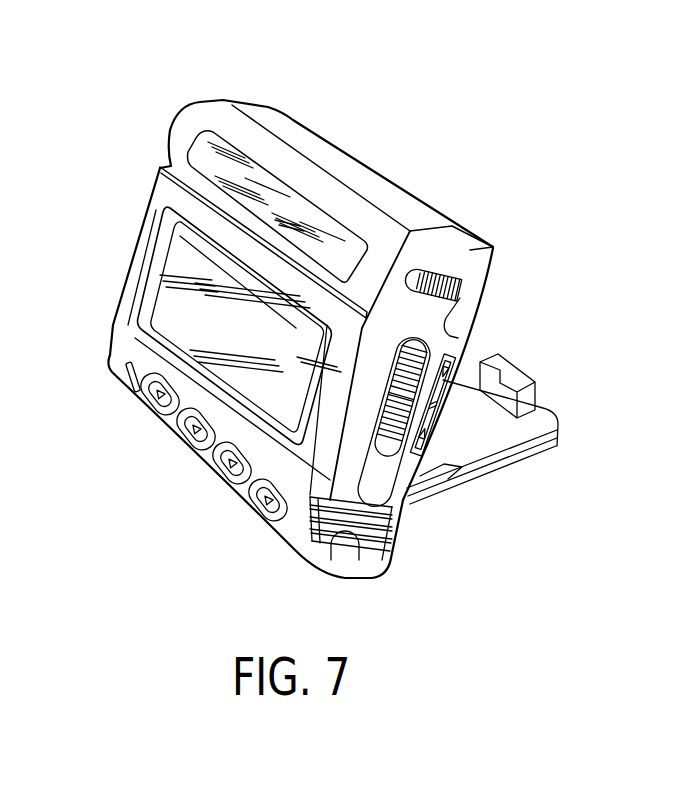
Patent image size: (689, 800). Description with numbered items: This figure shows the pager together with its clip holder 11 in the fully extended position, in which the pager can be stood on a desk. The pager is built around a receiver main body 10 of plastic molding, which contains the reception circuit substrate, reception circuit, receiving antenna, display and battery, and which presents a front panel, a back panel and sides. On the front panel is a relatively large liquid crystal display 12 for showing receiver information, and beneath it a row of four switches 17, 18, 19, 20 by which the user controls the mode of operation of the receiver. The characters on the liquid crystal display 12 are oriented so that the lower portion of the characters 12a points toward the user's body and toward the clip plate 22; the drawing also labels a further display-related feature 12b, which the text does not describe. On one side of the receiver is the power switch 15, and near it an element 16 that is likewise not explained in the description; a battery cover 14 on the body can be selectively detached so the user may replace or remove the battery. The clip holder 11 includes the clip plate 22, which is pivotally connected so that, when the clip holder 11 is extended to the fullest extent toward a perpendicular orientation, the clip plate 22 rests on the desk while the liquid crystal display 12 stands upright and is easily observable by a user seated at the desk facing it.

The receiver main body 10 is at (252, 102).
The clip holder 11 is at (600, 444).
The liquid crystal display 12 is at (178, 323).
The lower portion of the characters 12a is at (177, 337).
The display window upper portion 12b is at (167, 217).
The battery cover 14 is at (488, 302).
The power switch 15 is at (378, 450).
The lock switch 16 is at (478, 290).
The switch 17 is at (152, 403).
The switch 18 is at (191, 438).
The switch 19 is at (233, 474).
The switch 20 is at (268, 512).
The clip plate 22 is at (510, 470).